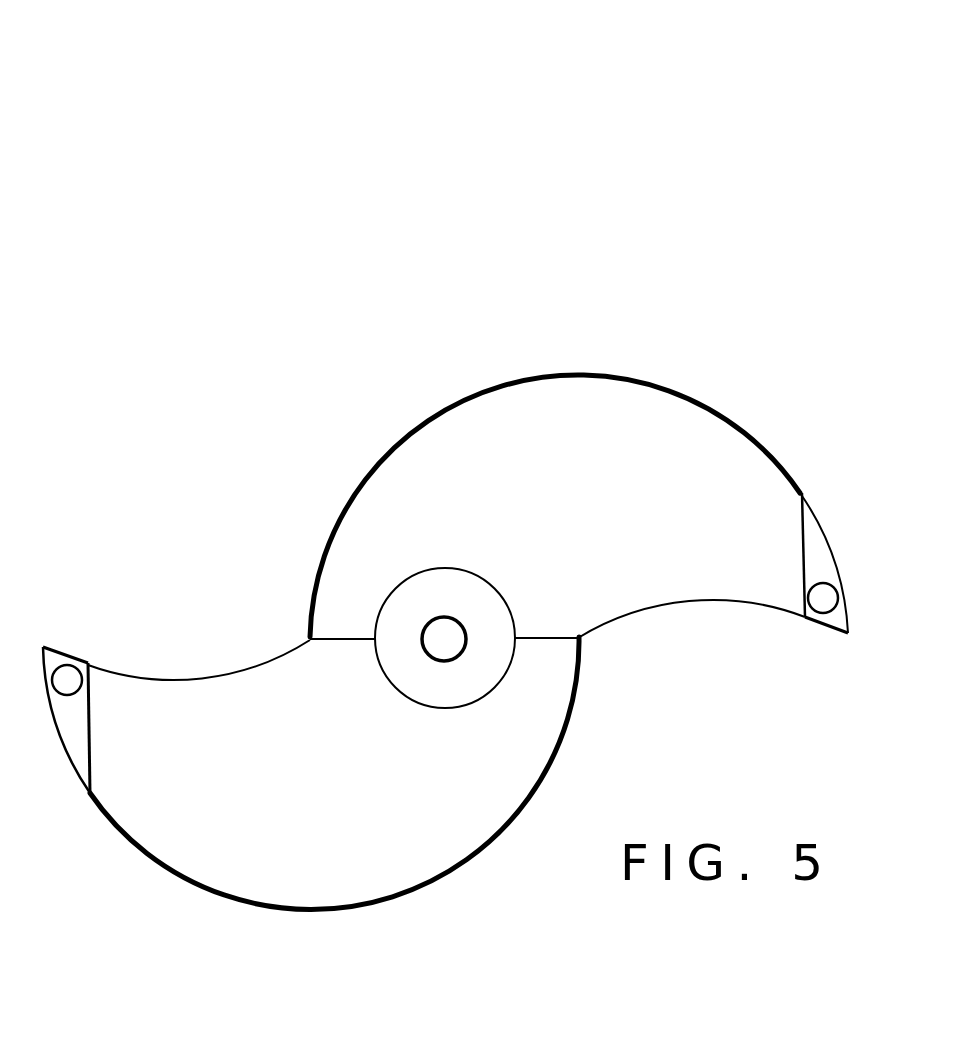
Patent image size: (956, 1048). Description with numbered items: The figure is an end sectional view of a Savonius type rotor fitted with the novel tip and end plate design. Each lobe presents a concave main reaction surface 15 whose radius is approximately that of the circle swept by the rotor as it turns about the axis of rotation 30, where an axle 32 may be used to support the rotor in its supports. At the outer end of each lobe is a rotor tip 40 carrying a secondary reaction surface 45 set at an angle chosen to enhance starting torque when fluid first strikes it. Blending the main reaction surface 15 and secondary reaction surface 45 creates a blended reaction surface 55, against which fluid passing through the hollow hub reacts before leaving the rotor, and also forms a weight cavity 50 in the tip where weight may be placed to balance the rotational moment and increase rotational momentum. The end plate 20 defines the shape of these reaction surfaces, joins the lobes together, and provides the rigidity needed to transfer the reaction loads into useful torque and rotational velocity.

The main reaction surface 15 is at (530, 368).
The end plate 20 is at (633, 455).
The axis of rotation 30 is at (443, 640).
The axle 32 is at (447, 630).
The rotor tip 40 is at (43, 647).
The secondary reaction surface 45 is at (93, 713).
The weight cavity 50 is at (83, 663).
The blended reaction surface 55 is at (67, 680).